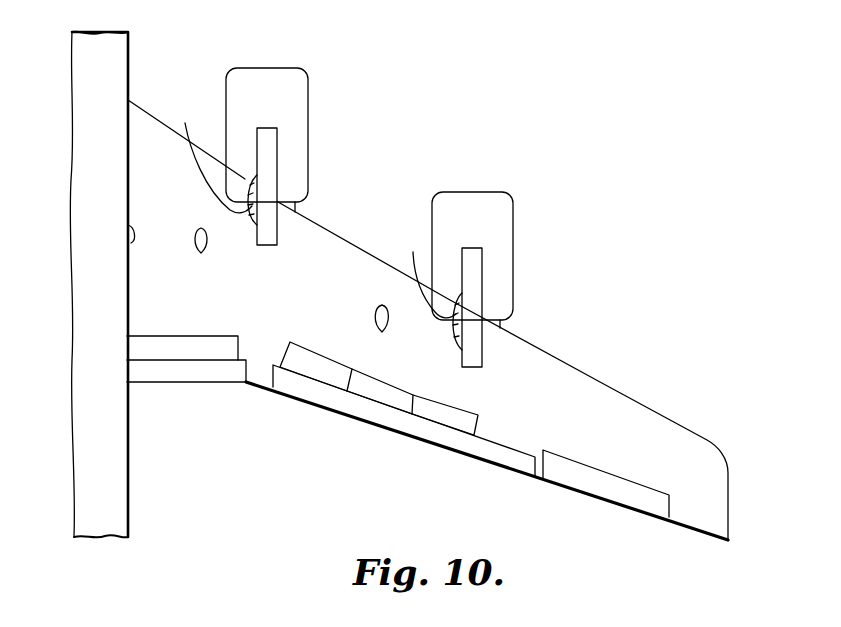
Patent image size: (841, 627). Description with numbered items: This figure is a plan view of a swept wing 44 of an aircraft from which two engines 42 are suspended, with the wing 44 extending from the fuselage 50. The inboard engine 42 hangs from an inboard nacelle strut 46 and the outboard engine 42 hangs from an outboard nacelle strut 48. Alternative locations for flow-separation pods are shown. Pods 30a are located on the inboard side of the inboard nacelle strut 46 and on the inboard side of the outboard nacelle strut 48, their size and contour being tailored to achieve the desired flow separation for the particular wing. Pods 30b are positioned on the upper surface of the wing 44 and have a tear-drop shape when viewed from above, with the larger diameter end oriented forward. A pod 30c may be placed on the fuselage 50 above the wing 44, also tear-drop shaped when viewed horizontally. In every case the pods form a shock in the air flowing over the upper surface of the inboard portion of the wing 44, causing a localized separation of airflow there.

The fuselage 50 is at (115, 58).
The wing 44 is at (660, 413).
The engine 42 is at (298, 97).
The inboard nacelle strut 46 is at (272, 167).
The outboard nacelle strut 48 is at (482, 293).
The pod 30a is at (308, 208).
The pod 30b is at (203, 253).
The pod 30c is at (131, 243).